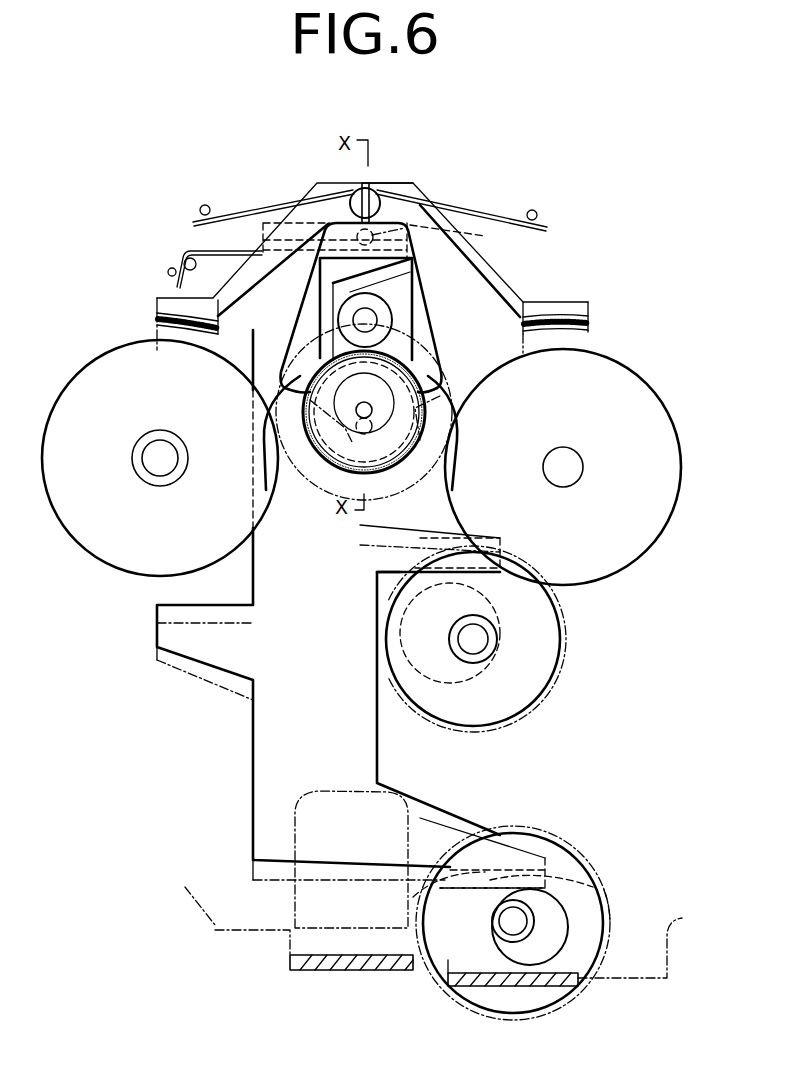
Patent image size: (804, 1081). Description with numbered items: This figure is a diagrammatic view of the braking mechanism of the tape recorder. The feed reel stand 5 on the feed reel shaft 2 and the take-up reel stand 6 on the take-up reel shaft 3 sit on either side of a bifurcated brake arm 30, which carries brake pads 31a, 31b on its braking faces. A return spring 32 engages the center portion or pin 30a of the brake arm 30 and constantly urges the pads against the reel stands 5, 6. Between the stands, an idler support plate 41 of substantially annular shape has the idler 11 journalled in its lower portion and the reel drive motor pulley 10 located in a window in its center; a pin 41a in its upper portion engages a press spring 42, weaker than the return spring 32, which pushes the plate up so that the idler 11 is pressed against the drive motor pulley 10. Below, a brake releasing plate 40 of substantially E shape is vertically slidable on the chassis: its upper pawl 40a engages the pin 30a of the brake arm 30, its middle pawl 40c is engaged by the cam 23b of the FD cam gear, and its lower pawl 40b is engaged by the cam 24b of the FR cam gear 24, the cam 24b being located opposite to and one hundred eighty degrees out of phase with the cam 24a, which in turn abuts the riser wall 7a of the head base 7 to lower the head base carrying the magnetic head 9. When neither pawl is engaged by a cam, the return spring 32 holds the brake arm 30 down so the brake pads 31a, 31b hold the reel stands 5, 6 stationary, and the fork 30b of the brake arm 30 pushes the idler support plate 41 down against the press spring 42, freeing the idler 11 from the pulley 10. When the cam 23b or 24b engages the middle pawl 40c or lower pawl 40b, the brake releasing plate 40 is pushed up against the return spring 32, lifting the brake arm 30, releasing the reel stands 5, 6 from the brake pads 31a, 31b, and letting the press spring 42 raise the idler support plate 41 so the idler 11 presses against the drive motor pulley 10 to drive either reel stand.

The feed reel shaft 2 is at (164, 445).
The take-up reel shaft 3 is at (565, 455).
The feed reel stand 5 is at (90, 380).
The take-up reel stand 6 is at (658, 405).
The head base 7 is at (232, 917).
The riser wall 7a is at (545, 986).
The magnetic head 9 is at (305, 830).
The reel drive motor pulley 10 is at (392, 322).
The idler 11 is at (388, 462).
The cam 23b is at (428, 685).
The FR cam gear 24 is at (466, 1000).
The cam 24a is at (560, 933).
The cam 24b is at (600, 892).
The brake arm 30 is at (505, 285).
The pin 30a is at (380, 196).
The fork 30b is at (432, 206).
The brake pad 31a is at (160, 318).
The brake pad 31b is at (590, 326).
The return spring 32 is at (276, 202).
The brake releasing plate 40 is at (268, 750).
The upper pawl 40a is at (414, 292).
The lower pawl 40b is at (434, 894).
The middle pawl 40c is at (381, 579).
The idler support plate 41 is at (430, 342).
The pin 41a is at (455, 233).
The press spring 42 is at (212, 252).